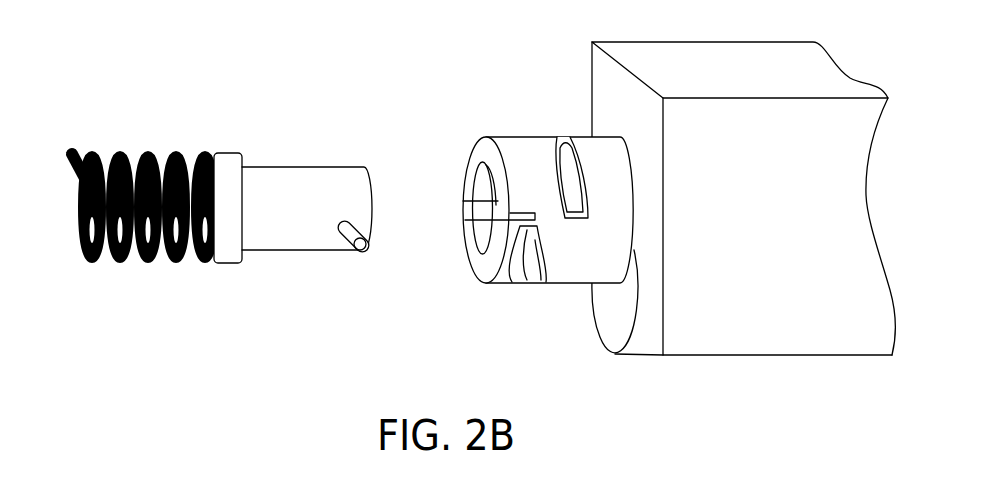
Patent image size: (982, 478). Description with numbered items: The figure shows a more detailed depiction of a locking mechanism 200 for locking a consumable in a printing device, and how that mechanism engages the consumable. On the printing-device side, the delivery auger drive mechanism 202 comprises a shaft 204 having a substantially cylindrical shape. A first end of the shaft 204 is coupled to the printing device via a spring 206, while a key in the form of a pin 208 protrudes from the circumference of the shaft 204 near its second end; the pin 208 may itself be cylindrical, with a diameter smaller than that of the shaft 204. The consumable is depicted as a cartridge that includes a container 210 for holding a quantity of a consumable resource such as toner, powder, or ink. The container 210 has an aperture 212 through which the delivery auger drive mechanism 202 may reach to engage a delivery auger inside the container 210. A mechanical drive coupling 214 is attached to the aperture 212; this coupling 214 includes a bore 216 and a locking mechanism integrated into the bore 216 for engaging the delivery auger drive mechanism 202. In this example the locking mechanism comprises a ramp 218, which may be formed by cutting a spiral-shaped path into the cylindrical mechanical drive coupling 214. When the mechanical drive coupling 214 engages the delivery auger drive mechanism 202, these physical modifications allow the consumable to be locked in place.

The locking mechanism 200 is at (370, 58).
The delivery auger drive mechanism 202 is at (223, 147).
The shaft 204 is at (295, 185).
The spring 206 is at (83, 160).
The pin 208 is at (347, 233).
The container 210 is at (750, 224).
The aperture 212 is at (633, 245).
The mechanical drive coupling 214 is at (510, 130).
The bore 216 is at (462, 204).
The ramp 218 is at (525, 268).